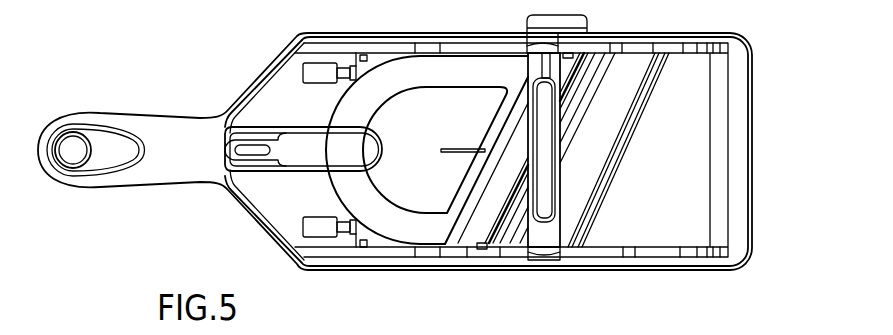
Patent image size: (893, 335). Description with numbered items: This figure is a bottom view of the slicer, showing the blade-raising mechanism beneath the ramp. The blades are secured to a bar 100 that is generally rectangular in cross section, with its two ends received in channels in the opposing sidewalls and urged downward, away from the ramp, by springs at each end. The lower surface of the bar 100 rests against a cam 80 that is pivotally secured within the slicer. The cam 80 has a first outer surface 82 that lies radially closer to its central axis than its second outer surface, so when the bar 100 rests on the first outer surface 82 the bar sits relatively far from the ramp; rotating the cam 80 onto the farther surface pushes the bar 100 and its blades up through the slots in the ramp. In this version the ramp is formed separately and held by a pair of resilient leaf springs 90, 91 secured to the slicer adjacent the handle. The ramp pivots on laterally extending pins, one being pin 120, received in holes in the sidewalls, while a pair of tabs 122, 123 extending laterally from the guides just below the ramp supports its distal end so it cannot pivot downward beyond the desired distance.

The cam 80 is at (554, 66).
The first outer surface 82 is at (560, 148).
The spring 90 is at (316, 73).
The spring 91 is at (316, 227).
The bar 100 is at (513, 210).
The pin 120 is at (364, 250).
The tab 122 is at (478, 250).
The tab 123 is at (584, 22).